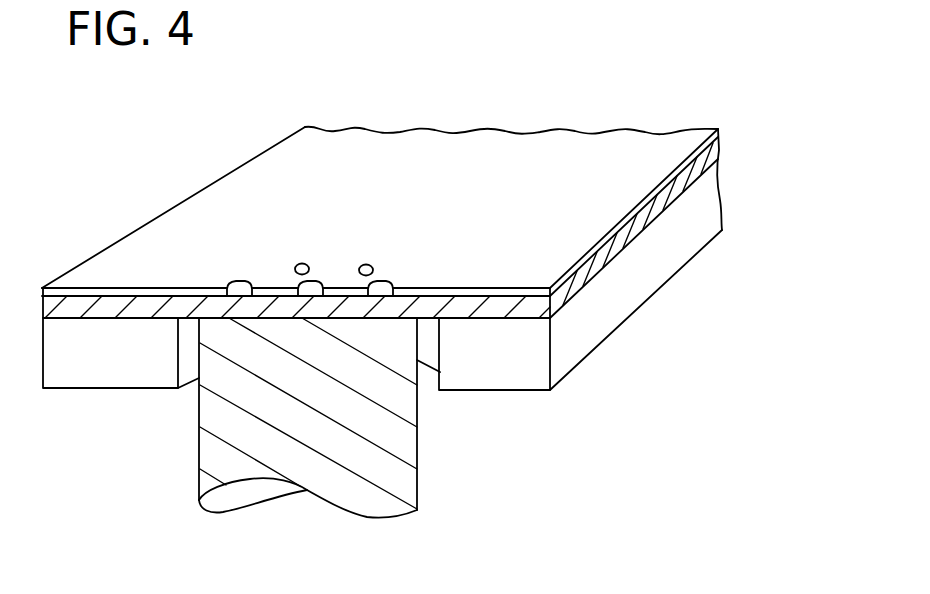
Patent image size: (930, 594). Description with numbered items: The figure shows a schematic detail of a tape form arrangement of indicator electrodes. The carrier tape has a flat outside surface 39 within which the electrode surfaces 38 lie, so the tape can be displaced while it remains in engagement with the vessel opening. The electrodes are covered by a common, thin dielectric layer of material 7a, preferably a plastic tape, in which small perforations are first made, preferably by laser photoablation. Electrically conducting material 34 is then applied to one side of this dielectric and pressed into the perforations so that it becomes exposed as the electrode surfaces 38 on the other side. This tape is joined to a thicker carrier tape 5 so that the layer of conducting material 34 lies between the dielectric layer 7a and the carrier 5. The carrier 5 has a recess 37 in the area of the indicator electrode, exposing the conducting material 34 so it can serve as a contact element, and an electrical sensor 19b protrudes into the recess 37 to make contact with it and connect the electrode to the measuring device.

The flat outside surface 39 is at (608, 187).
The dielectric layer of material 7a is at (508, 307).
The electrode surfaces 38 is at (299, 284).
The electrically conducting material 34 is at (507, 308).
The carrier tape 5 is at (518, 363).
The recess 37 is at (425, 388).
The electrical sensor 19b is at (397, 492).